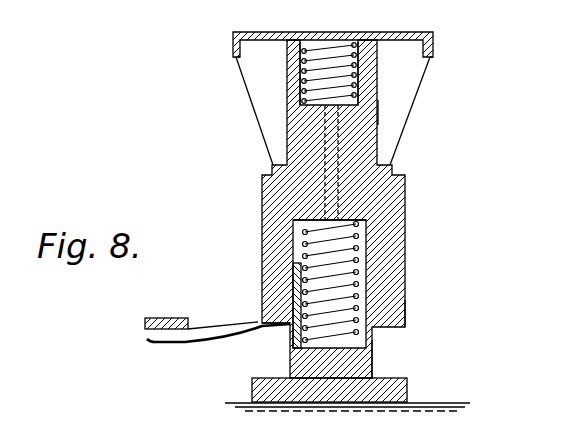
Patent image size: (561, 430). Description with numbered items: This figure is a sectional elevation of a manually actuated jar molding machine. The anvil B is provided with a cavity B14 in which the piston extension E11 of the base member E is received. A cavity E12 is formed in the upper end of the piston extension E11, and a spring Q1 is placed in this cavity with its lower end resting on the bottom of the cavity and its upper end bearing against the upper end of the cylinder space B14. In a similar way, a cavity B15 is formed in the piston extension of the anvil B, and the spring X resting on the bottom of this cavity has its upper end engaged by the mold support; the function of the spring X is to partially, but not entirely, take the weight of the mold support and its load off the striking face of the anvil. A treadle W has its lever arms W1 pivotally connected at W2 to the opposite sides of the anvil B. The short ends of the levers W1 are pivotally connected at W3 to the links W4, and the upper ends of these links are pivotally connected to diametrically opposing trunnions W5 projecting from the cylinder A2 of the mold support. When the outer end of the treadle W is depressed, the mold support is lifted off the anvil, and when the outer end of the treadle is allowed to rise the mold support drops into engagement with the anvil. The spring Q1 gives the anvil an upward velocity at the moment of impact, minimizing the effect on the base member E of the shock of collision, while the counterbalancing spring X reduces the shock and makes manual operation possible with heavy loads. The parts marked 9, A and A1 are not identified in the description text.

The retaining pin 9 is at (237, 57).
The casing skirt A is at (378, 92).
The cap A1 is at (402, 47).
The cylinder of the mold support A2 is at (290, 84).
The spring X is at (378, 113).
The anvil B is at (287, 147).
The cavity B14 is at (394, 232).
The cavity B15 is at (290, 112).
The links W4 is at (407, 180).
The trunnions W5 is at (290, 62).
The spring Q1 is at (405, 280).
The pivotal connection W3 is at (292, 283).
The treadle W is at (148, 335).
The lever arms W1 is at (262, 297).
The pivotal connection W2 is at (290, 323).
The base member E is at (407, 392).
The piston extension E11 is at (373, 352).
The cavity E12 is at (400, 330).